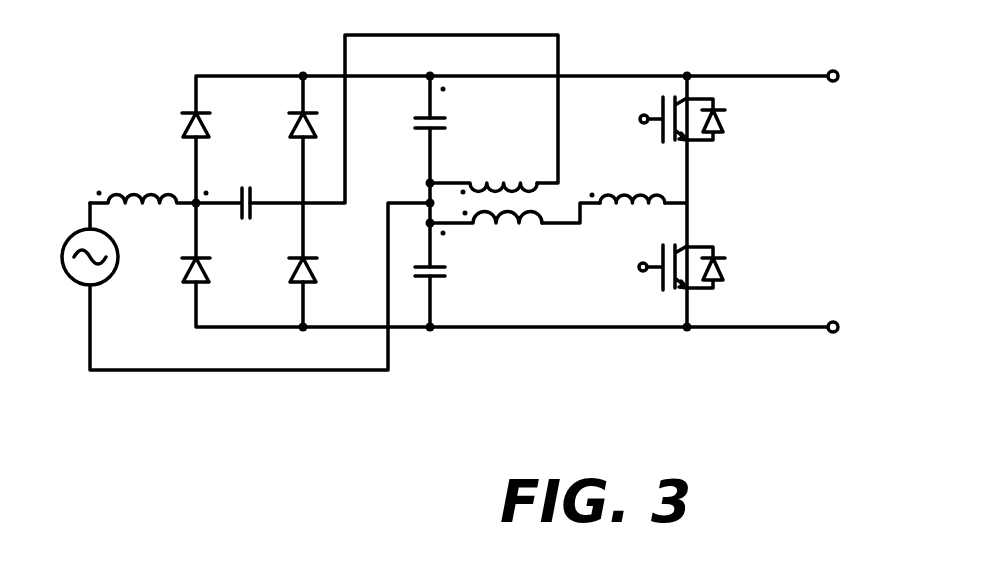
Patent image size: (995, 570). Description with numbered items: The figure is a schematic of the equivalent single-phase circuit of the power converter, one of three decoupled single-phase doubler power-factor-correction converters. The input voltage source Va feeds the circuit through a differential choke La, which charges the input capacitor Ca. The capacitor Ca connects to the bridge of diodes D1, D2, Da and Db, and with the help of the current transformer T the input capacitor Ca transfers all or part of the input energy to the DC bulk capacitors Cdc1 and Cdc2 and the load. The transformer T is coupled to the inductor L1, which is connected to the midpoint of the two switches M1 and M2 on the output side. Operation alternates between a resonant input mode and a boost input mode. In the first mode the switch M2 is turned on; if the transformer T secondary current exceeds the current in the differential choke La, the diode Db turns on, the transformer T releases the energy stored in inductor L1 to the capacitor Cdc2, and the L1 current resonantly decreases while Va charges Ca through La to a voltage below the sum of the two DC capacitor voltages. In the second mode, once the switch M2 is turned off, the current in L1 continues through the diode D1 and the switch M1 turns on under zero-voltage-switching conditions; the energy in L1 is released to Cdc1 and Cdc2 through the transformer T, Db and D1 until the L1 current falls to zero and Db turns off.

The input voltage source Va is at (75, 239).
The differential choke La is at (149, 217).
The diode D1 is at (169, 121).
The diode D2 is at (175, 290).
The diode Da is at (284, 109).
The diode Db is at (321, 290).
The input capacitor Ca is at (231, 220).
The DC bulk capacitor Cdc1 is at (474, 118).
The DC bulk capacitor Cdc2 is at (468, 276).
The current transformer T is at (486, 222).
The inductor L1 is at (627, 220).
The switch M1 is at (665, 131).
The switch M2 is at (673, 284).